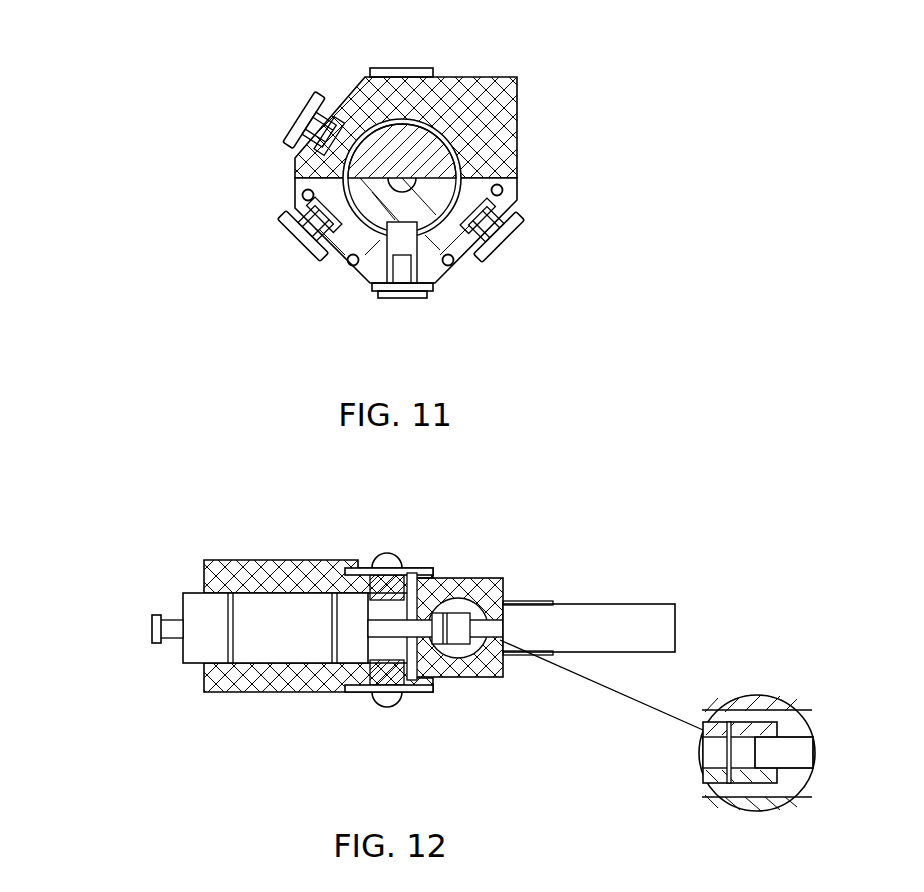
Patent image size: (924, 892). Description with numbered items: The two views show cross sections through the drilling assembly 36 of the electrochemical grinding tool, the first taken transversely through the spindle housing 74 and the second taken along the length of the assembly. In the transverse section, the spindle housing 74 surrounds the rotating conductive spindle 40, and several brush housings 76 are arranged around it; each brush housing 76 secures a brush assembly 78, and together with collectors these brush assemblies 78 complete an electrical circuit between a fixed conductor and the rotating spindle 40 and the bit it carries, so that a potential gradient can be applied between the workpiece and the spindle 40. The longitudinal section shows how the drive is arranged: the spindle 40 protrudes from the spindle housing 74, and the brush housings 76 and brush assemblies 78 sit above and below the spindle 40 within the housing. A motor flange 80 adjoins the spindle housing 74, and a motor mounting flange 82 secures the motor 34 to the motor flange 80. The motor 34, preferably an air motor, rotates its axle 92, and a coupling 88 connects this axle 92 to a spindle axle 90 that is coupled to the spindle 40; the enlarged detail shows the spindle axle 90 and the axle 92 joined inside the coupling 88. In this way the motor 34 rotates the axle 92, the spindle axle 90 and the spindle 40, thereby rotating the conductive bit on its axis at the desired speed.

In FIG. 12, the motor 34 is at (658, 632).
In FIG. 12, the drilling assembly 36 is at (662, 519).
In FIG. 12, the spindle 40 is at (175, 628).
In FIG. 11, the spindle housing 74 is at (507, 93).
In FIG. 12, the spindle housing 74 is at (222, 562).
In FIG. 11, the brush housings 76 is at (296, 188).
In FIG. 12, the brush housings 76 is at (378, 561).
In FIG. 11, the brush assemblies 78 is at (403, 70).
In FIG. 12, the brush assemblies 78 is at (400, 566).
In FIG. 12, the motor flange 80 is at (486, 579).
In FIG. 12, the motor mounting flange 82 is at (530, 603).
In FIG. 12, the coupling 88 is at (458, 640).
In FIG. 12, the spindle axle 90 is at (707, 755).
In FIG. 12, the axle 92 is at (795, 752).